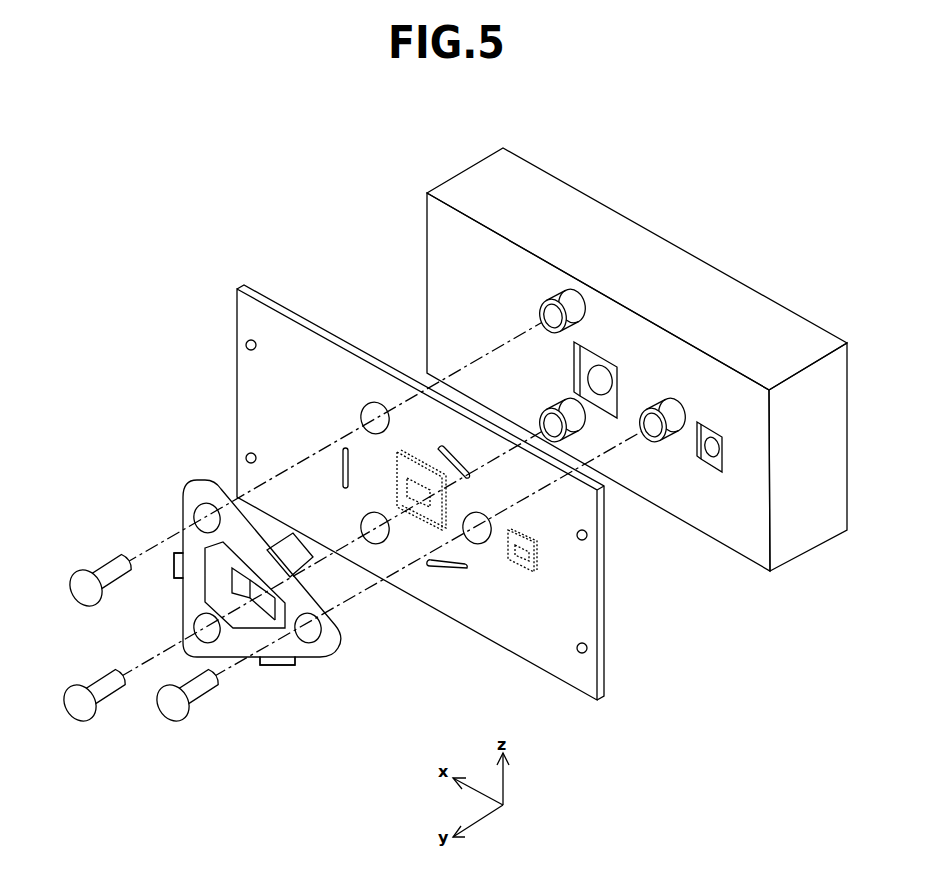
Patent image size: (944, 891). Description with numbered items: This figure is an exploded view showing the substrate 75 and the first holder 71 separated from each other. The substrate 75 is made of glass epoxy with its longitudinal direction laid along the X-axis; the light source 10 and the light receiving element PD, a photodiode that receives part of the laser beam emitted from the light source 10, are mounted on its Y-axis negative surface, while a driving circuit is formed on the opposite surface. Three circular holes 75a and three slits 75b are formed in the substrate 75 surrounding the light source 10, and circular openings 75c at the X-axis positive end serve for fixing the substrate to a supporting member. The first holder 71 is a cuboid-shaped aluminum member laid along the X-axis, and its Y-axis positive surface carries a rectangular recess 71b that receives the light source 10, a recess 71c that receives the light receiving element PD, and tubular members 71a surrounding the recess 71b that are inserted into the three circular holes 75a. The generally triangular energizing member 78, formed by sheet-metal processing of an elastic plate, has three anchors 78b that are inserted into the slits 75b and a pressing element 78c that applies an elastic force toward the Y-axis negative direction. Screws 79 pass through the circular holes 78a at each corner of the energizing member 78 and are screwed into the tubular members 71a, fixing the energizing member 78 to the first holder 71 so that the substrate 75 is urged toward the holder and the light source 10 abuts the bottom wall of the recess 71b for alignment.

The first holder 71 is at (637, 344).
The tubular members 71a is at (633, 403).
The rectangular recess 71b is at (486, 355).
The recess 71c is at (745, 543).
The substrate 75 is at (420, 480).
The circular holes 75a is at (358, 534).
The slits 75b is at (413, 530).
The circular openings 75c is at (418, 489).
The energizing member 78 is at (225, 548).
The circular holes 78a is at (230, 622).
The anchors 78b is at (239, 629).
The pressing element 78c is at (245, 632).
The screws 79 is at (127, 667).
The light source 10 is at (424, 573).
The light receiving element PD is at (560, 654).